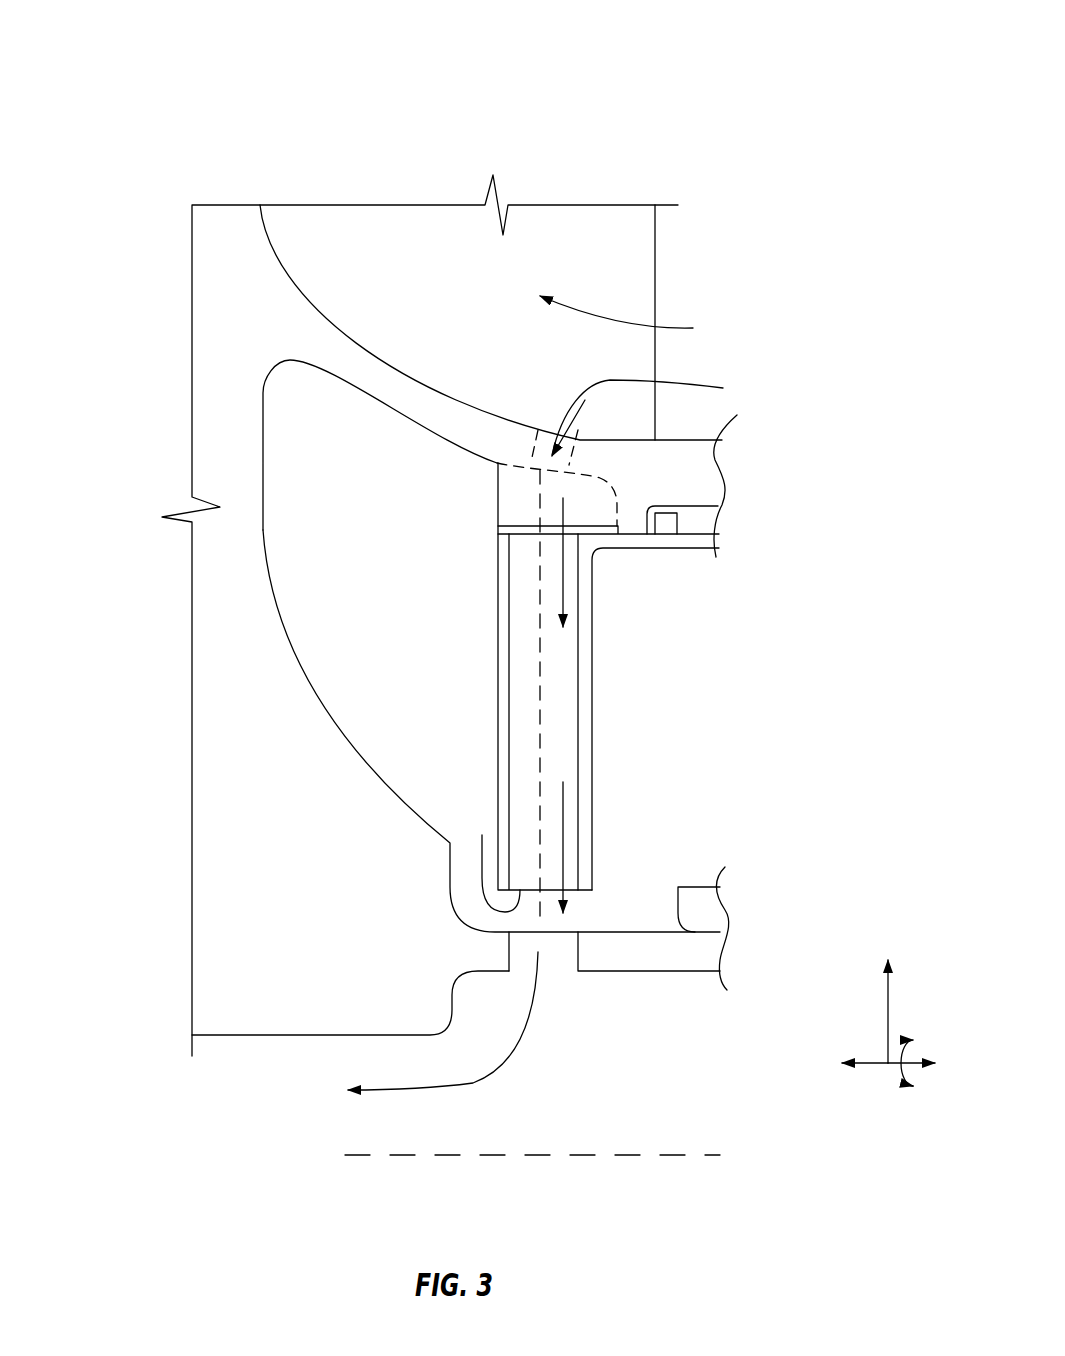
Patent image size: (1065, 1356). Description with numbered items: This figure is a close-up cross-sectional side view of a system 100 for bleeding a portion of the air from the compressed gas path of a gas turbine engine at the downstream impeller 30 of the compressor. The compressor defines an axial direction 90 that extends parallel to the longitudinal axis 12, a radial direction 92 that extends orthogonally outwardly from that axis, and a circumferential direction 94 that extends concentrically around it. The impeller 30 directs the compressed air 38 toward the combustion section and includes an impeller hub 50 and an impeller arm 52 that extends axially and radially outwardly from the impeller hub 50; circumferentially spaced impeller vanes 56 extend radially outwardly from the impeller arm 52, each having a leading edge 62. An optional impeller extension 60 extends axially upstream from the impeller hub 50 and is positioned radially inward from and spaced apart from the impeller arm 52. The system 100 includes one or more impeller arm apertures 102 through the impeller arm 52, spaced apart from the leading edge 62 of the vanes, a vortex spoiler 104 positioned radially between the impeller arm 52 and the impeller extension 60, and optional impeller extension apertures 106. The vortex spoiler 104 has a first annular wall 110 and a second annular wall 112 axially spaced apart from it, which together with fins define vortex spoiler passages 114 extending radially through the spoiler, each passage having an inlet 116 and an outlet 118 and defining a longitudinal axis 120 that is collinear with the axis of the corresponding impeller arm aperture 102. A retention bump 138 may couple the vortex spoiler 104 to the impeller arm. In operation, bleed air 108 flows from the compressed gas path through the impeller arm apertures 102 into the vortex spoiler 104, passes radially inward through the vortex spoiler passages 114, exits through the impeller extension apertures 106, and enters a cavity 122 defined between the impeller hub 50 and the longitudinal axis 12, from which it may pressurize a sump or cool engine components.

The longitudinal axis 12 is at (608, 1155).
The impeller 30 is at (170, 584).
The compressed air 38 is at (718, 328).
The impeller hub 50 is at (310, 860).
The impeller arm 52 is at (390, 392).
The impeller vanes 56 is at (378, 230).
The impeller extension 60 is at (668, 958).
The leading edge 62 is at (655, 232).
The axial direction 90 is at (868, 1067).
The radial direction 92 is at (888, 1002).
The circumferential direction 94 is at (905, 1080).
The system for bleeding air 100 is at (188, 102).
The impeller arm apertures 102 is at (567, 450).
The vortex spoiler 104 is at (627, 615).
The impeller extension apertures 106 is at (561, 943).
The bleed air 108 is at (610, 380).
The first annular wall 110 is at (583, 695).
The second annular wall 112 is at (505, 675).
The vortex spoiler passages 114 is at (562, 724).
The inlet 116 is at (522, 530).
The outlet 118 is at (482, 840).
The longitudinal axis 120 is at (540, 735).
The cavity 122 is at (288, 1105).
The retention bump 138 is at (667, 524).